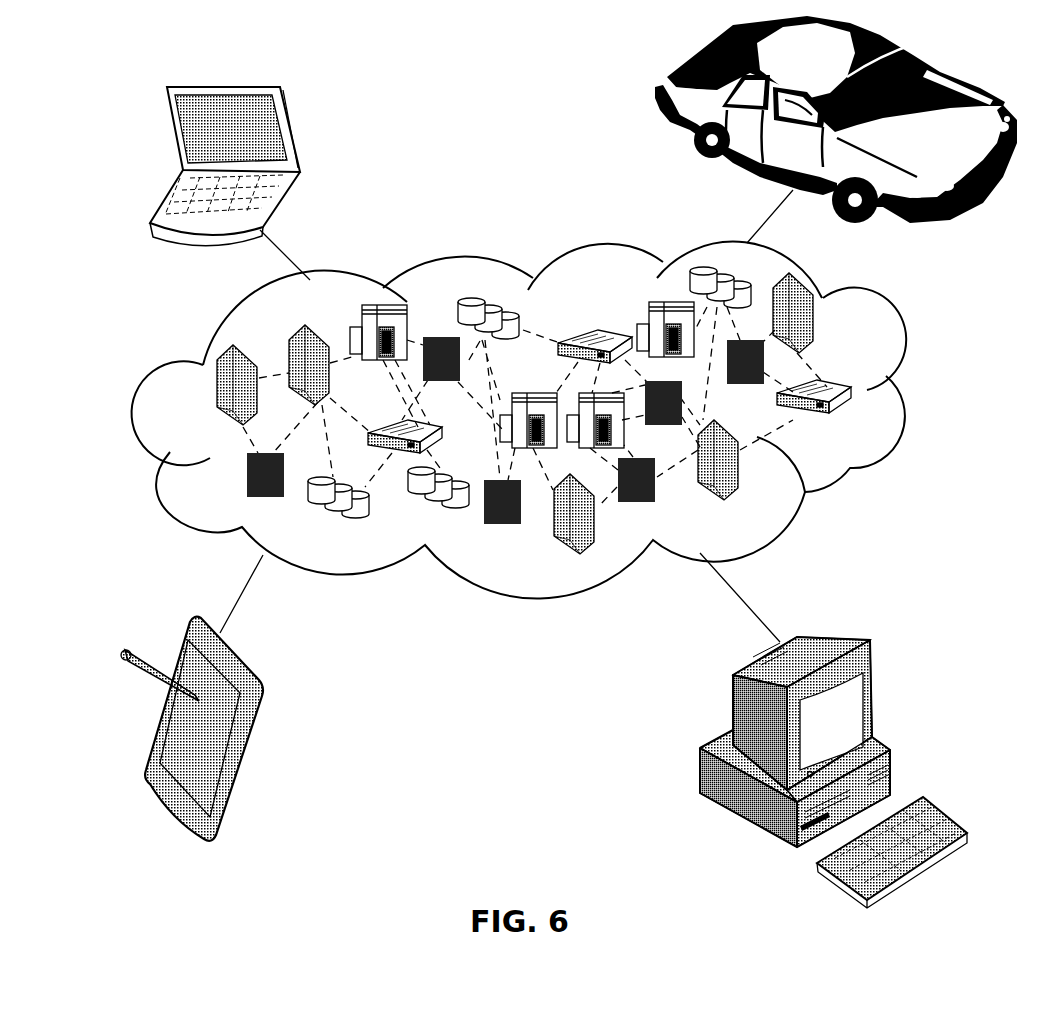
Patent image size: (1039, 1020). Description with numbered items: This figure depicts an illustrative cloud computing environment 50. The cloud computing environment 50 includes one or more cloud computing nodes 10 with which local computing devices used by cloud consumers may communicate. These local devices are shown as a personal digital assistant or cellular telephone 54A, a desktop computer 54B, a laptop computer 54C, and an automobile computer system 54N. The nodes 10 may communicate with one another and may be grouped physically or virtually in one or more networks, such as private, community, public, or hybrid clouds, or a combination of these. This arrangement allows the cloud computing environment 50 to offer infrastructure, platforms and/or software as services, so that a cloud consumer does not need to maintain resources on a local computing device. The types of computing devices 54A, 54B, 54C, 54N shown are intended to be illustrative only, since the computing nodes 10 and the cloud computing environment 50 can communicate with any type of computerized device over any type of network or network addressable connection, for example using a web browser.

The cloud computing nodes 10 is at (858, 430).
The cloud computing environment 50 is at (905, 395).
The personal digital assistant (PDA) or cellular telephone 54A is at (257, 720).
The desktop computer 54B is at (847, 630).
The laptop computer 54C is at (293, 130).
The automobile computer system 54N is at (662, 100).